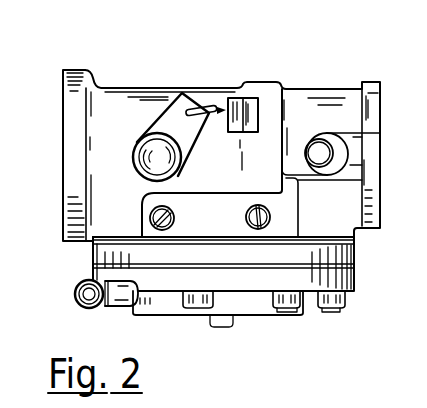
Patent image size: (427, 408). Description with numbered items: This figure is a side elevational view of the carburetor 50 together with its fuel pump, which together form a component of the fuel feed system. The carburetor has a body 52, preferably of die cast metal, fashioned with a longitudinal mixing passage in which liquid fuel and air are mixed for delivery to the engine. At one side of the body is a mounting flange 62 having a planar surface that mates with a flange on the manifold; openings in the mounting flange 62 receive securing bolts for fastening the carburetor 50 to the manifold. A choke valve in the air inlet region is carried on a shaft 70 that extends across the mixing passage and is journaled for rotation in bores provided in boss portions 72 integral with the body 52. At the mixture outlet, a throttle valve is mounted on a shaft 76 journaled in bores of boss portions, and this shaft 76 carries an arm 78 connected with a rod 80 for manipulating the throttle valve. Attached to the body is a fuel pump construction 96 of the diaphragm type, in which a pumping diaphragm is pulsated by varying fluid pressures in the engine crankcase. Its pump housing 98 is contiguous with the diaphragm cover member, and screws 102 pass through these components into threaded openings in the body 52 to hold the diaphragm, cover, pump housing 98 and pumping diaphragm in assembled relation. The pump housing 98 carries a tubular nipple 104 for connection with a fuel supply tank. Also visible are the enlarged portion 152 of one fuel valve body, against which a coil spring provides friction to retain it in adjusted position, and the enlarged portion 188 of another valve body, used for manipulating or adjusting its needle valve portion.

The carburetor 50 is at (225, 59).
The body 52 is at (338, 88).
The mounting flange 62 is at (79, 68).
The shaft 70 is at (318, 147).
The boss portions 72 is at (301, 143).
The shaft 76 is at (140, 137).
The arm 78 is at (141, 138).
The rod 80 is at (219, 110).
The fuel pump construction 96 is at (371, 296).
The pump housing 98 is at (356, 268).
The screws 102 is at (300, 306).
The tubular nipple 104 is at (76, 284).
The enlarged portion 152 is at (246, 214).
The enlarged portion 188 is at (170, 211).